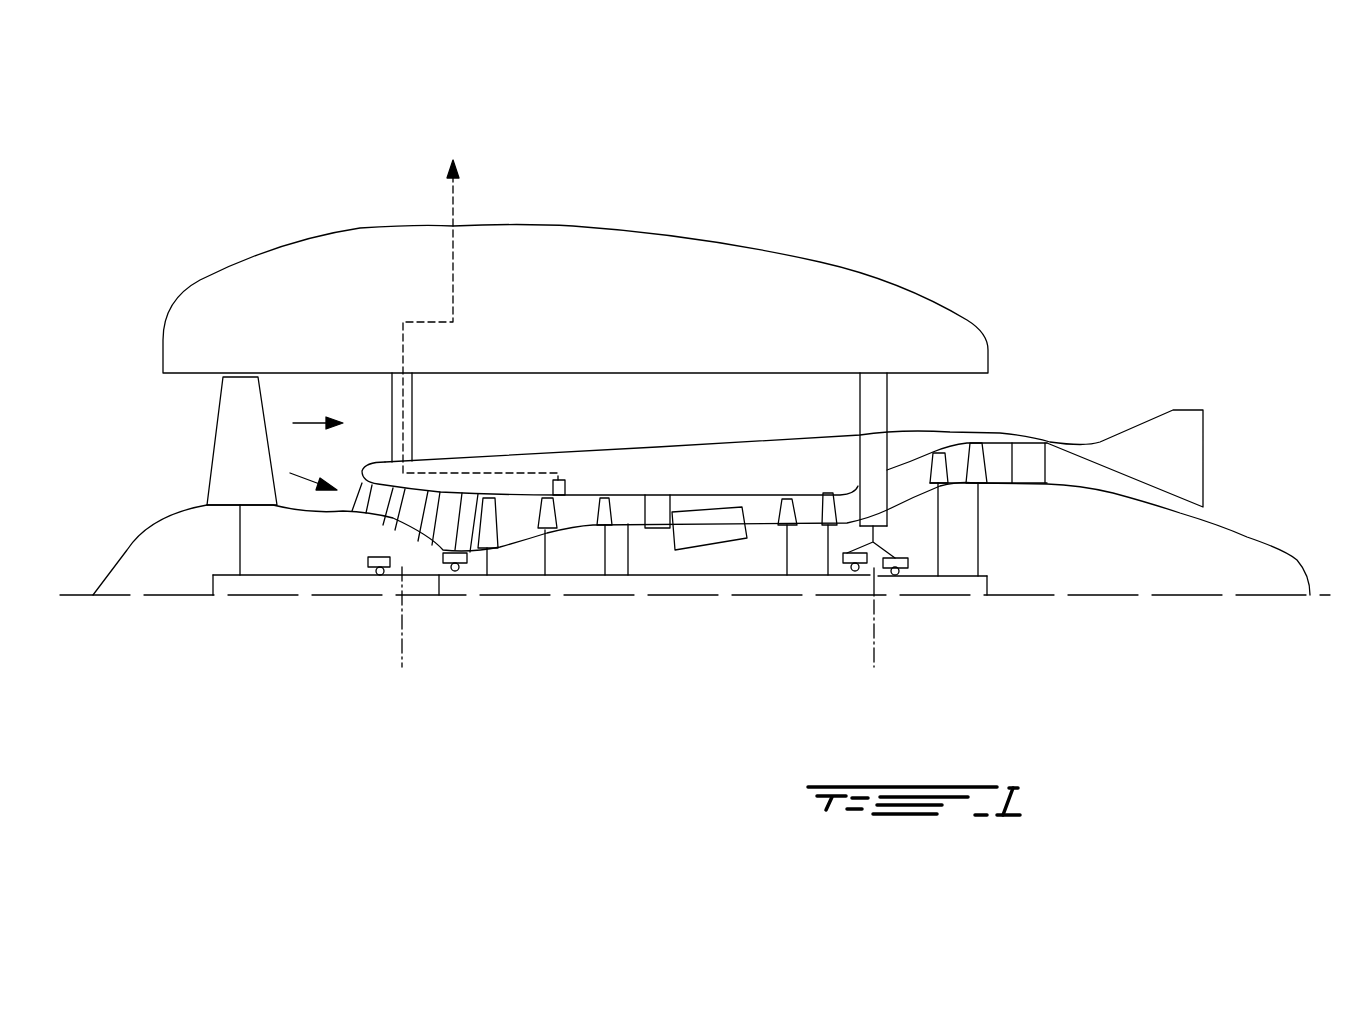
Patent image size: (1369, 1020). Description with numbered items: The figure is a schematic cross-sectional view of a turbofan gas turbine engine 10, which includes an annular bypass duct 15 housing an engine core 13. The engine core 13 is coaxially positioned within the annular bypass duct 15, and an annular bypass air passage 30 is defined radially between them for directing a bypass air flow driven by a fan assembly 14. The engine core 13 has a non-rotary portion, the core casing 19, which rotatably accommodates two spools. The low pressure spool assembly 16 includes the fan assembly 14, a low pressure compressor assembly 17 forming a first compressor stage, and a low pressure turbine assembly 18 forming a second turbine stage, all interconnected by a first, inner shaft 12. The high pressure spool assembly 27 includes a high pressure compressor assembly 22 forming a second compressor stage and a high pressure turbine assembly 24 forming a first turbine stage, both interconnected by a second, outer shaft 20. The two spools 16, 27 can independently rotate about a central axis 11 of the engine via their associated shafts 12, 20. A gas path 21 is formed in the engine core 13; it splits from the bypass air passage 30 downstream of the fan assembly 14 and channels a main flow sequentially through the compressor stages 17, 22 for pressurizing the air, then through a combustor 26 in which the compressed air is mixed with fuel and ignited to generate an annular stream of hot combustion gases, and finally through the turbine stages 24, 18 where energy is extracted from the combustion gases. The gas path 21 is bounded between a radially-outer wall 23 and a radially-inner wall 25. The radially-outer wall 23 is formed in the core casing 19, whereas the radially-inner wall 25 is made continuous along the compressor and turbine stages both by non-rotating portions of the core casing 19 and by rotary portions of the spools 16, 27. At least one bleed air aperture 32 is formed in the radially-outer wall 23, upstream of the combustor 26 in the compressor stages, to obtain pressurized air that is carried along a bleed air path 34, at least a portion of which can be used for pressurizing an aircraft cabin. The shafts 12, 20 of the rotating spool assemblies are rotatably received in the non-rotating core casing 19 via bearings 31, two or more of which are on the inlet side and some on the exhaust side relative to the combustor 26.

The turbofan gas turbine engine 10 is at (1035, 346).
The central axis 11 is at (1242, 595).
The inner shaft 12 is at (296, 583).
The engine core 13 is at (762, 430).
The fan assembly 14 is at (240, 395).
The annular bypass duct 15 is at (601, 293).
The low pressure spool assembly 16 is at (262, 546).
The low pressure compressor assembly 17 is at (392, 508).
The low pressure turbine assembly 18 is at (978, 470).
The core casing 19 is at (928, 432).
The outer shaft 20 is at (750, 582).
The gas path 21 is at (590, 510).
The high pressure compressor assembly 22 is at (547, 527).
The radially-outer wall 23 is at (592, 502).
The high pressure turbine assembly 24 is at (828, 517).
The radially-inner wall 25 is at (627, 528).
The combustor 26 is at (697, 532).
The high pressure spool assembly 27 is at (724, 592).
The annular bypass air passage 30 is at (678, 411).
The bearings 31 is at (458, 567).
The bleed air aperture 32 is at (560, 480).
The bleed air path 34 is at (455, 212).